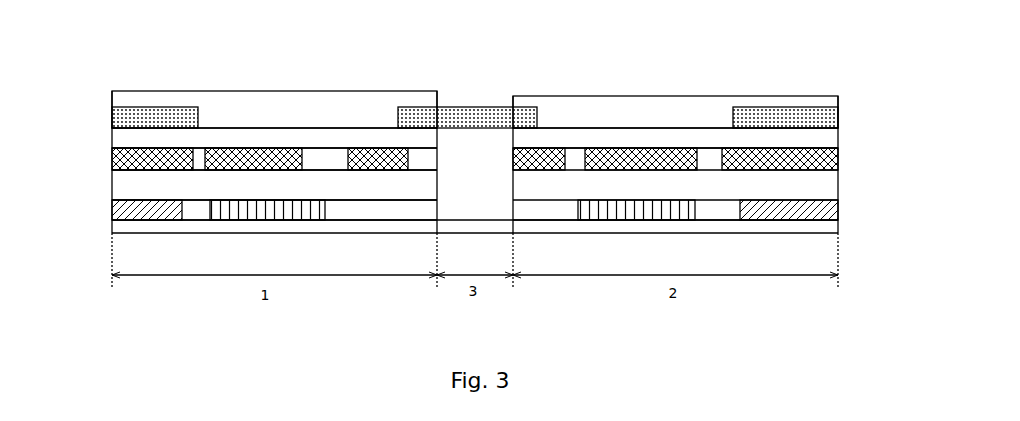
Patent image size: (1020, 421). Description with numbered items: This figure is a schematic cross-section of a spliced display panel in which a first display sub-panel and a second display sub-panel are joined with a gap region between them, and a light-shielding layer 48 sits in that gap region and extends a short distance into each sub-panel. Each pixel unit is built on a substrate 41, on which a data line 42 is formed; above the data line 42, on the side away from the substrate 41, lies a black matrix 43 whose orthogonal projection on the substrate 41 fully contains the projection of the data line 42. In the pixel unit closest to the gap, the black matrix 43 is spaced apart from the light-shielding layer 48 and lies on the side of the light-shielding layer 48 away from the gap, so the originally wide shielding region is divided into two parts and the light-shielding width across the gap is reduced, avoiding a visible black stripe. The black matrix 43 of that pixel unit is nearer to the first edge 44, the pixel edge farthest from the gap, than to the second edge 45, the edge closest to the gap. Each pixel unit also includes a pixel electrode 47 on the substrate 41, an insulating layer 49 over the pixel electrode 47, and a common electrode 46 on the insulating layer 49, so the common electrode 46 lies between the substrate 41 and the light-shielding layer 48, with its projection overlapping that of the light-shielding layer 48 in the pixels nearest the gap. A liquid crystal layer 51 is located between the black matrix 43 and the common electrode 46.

The substrate 41 is at (596, 222).
The data line 42 is at (112, 210).
The black matrix 43 is at (163, 122).
The first edge 44 is at (110, 135).
The second edge 45 is at (512, 139).
The common electrode 46 is at (838, 150).
The pixel electrode 47 is at (290, 214).
The light-shielding layer 48 is at (450, 114).
The insulating layer 49 is at (135, 181).
The liquid crystal layer 51 is at (290, 138).